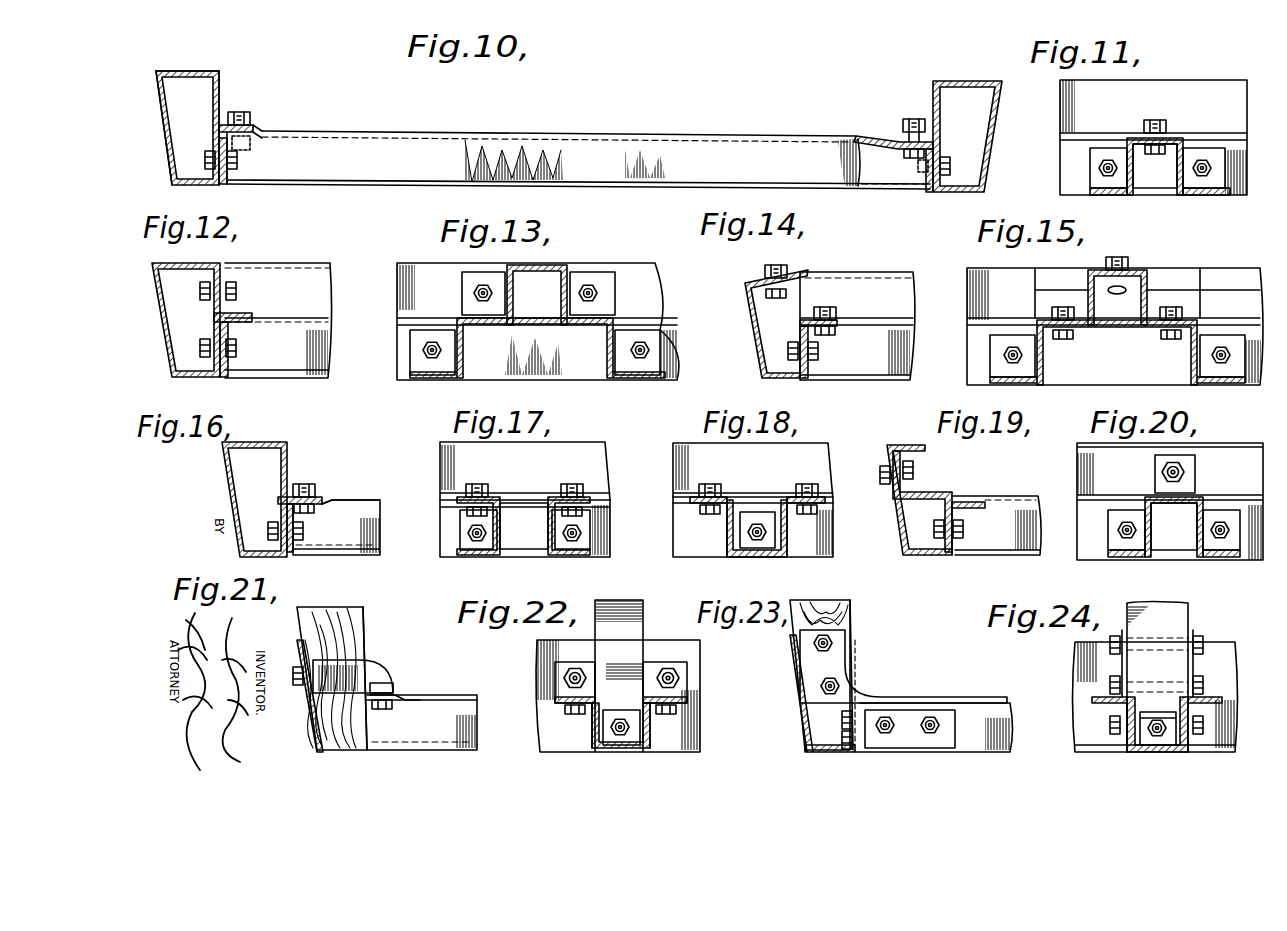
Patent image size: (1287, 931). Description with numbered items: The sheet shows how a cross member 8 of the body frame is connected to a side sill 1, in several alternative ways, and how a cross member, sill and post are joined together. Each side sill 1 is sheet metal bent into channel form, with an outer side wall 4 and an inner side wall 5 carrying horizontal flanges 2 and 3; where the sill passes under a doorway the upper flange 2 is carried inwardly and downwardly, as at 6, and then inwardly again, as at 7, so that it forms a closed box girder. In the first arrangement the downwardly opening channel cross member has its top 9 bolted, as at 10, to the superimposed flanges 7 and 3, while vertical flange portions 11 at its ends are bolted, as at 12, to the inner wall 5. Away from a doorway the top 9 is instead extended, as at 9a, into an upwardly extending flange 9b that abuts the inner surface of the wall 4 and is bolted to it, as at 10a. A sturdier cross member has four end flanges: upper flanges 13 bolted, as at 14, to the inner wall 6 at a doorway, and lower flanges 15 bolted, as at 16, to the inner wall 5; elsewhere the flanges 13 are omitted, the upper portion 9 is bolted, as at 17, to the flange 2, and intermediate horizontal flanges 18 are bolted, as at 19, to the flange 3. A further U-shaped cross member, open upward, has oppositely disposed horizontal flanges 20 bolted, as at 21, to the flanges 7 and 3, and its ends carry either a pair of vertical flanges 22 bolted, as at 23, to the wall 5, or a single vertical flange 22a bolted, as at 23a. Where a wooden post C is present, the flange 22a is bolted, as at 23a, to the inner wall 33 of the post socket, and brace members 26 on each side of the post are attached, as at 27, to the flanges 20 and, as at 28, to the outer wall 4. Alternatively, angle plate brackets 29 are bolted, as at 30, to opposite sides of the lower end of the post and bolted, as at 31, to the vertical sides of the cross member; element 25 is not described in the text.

In FIG. 10, the side sill 1 is at (165, 88).
In FIG. 11, the side sill 1 is at (1218, 90).
In FIG. 12, the side sill 1 is at (162, 330).
In FIG. 14, the side sill 1 is at (760, 360).
In FIG. 16, the side sill 1 is at (222, 478).
In FIG. 10, the upper horizontal flange 2 is at (213, 75).
In FIG. 14, the upper horizontal flange 2 is at (755, 284).
In FIG. 15, the upper horizontal flange 2 is at (1070, 270).
In FIG. 19, the upper horizontal flange 2 is at (914, 447).
In FIG. 20, the upper horizontal flange 2 is at (1220, 447).
In FIG. 10, the horizontal flange 3 is at (256, 131).
In FIG. 14, the horizontal flange 3 is at (838, 330).
In FIG. 16, the horizontal flange 3 is at (280, 500).
In FIG. 17, the horizontal flange 3 is at (612, 500).
In FIG. 18, the horizontal flange 3 is at (753, 500).
In FIG. 19, the horizontal flange 3 is at (972, 509).
In FIG. 20, the horizontal flange 3 is at (1092, 503).
In FIG. 10, the outer side wall 4 is at (160, 128).
In FIG. 14, the outer side wall 4 is at (748, 330).
In FIG. 19, the outer side wall 4 is at (898, 520).
In FIG. 20, the outer side wall 4 is at (1243, 455).
In FIG. 21, the outer side wall 4 is at (300, 652).
In FIG. 23, the outer side wall 4 is at (822, 693).
In FIG. 24, the outer side wall 4 is at (1100, 650).
In FIG. 10, the inner side wall 5 is at (220, 134).
In FIG. 11, the inner side wall 5 is at (1235, 157).
In FIG. 12, the inner side wall 5 is at (215, 320).
In FIG. 14, the inner side wall 5 is at (800, 330).
In FIG. 16, the inner side wall 5 is at (284, 506).
In FIG. 17, the inner side wall 5 is at (612, 545).
In FIG. 18, the inner side wall 5 is at (668, 546).
In FIG. 20, the inner side wall 5 is at (1262, 568).
In FIG. 10, the inwardly and downwardly extended flange portion 6 is at (222, 80).
In FIG. 11, the inwardly and downwardly extended flange portion 6 is at (1235, 100).
In FIG. 12, the inwardly and downwardly extended flange portion 6 is at (210, 272).
In FIG. 17, the inwardly and downwardly extended flange portion 6 is at (607, 453).
In FIG. 10, the inwardly extended flange portion 7 is at (252, 125).
In FIG. 16, the inwardly extended flange portion 7 is at (320, 497).
In FIG. 17, the inwardly extended flange portion 7 is at (610, 490).
In FIG. 18, the inwardly extended flange portion 7 is at (753, 500).
In FIG. 10, the cross member 8 is at (600, 137).
In FIG. 11, the cross member 8 is at (1130, 138).
In FIG. 12, the cross member 8 is at (328, 312).
In FIG. 13, the cross member 8 is at (560, 290).
In FIG. 14, the cross member 8 is at (905, 335).
In FIG. 15, the cross member 8 is at (1145, 306).
In FIG. 16, the cross member 8 is at (382, 510).
In FIG. 17, the cross member 8 is at (538, 557).
In FIG. 18, the cross member 8 is at (757, 557).
In FIG. 19, the cross member 8 is at (1030, 540).
In FIG. 20, the cross member 8 is at (1200, 522).
In FIG. 21, the cross member 8 is at (465, 695).
In FIG. 22, the cross member 8 is at (600, 752).
In FIG. 23, the cross member 8 is at (1000, 715).
In FIG. 24, the cross member 8 is at (1158, 752).
In FIG. 10, the top of cross member 9 is at (898, 143).
In FIG. 11, the top of cross member 9 is at (1178, 138).
In FIG. 13, the top of cross member 9 is at (540, 266).
In FIG. 14, the top of cross member 9 is at (915, 275).
In FIG. 15, the top of cross member 9 is at (1148, 272).
In FIG. 19, the top of cross member 9 is at (990, 497).
In FIG. 20, the top of cross member 9 is at (1175, 513).
In FIG. 19, the extension of top portion 9a is at (950, 494).
In FIG. 19, the upwardly extending flange 9b is at (915, 470).
In FIG. 20, the upwardly extending flange 9b is at (1190, 487).
In FIG. 10, the bolt 10 is at (924, 120).
In FIG. 11, the bolt 10 is at (1158, 120).
In FIG. 19, the bolt 10a is at (882, 474).
In FIG. 20, the bolt 10a is at (1160, 470).
In FIG. 10, the vertical flange portion 11 is at (223, 184).
In FIG. 11, the vertical flange portion 11 is at (1095, 160).
In FIG. 19, the vertical flange portion 11 is at (955, 556).
In FIG. 20, the vertical flange portion 11 is at (1112, 533).
In FIG. 10, the bolt 12 is at (952, 167).
In FIG. 11, the bolt 12 is at (1105, 178).
In FIG. 19, the bolt 12 is at (968, 535).
In FIG. 20, the bolt 12 is at (1140, 537).
In FIG. 12, the upper vertical flange 13 is at (220, 266).
In FIG. 13, the upper vertical flange 13 is at (478, 270).
In FIG. 12, the bolt 14 is at (240, 290).
In FIG. 13, the bolt 14 is at (470, 294).
In FIG. 12, the lower vertical flange 15 is at (228, 357).
In FIG. 13, the lower vertical flange 15 is at (415, 360).
In FIG. 14, the lower vertical flange 15 is at (820, 354).
In FIG. 15, the lower vertical flange 15 is at (1225, 383).
In FIG. 12, the bolt 16 is at (240, 345).
In FIG. 13, the bolt 16 is at (620, 348).
In FIG. 15, the bolt 16 is at (1025, 357).
In FIG. 14, the bolt 17 is at (777, 266).
In FIG. 15, the bolt 17 is at (1123, 256).
In FIG. 14, the intermediate horizontal flange 18 is at (838, 318).
In FIG. 15, the intermediate horizontal flange 18 is at (1168, 335).
In FIG. 14, the bolt 19 is at (830, 305).
In FIG. 15, the bolt 19 is at (1185, 310).
In FIG. 16, the horizontal flange 20 is at (328, 503).
In FIG. 17, the horizontal flange 20 is at (500, 500).
In FIG. 18, the horizontal flange 20 is at (700, 517).
In FIG. 21, the horizontal flange 20 is at (402, 695).
In FIG. 22, the horizontal flange 20 is at (558, 700).
In FIG. 16, the bolt 21 is at (312, 484).
In FIG. 17, the bolt 21 is at (490, 477).
In FIG. 18, the bolt 21 is at (805, 483).
In FIG. 16, the vertical flange 22 is at (285, 552).
In FIG. 17, the vertical flange 22 is at (470, 553).
In FIG. 18, the single vertical flange 22a is at (770, 553).
In FIG. 22, the single vertical flange 22a is at (650, 752).
In FIG. 24, the single vertical flange 22a is at (1180, 752).
In FIG. 16, the bolt 23 is at (303, 530).
In FIG. 17, the bolt 23 is at (466, 531).
In FIG. 18, the bolt 23a is at (745, 553).
In FIG. 22, the bolt 23a is at (615, 752).
In FIG. 24, the bolt 23a is at (1140, 752).
In FIG. 22, the rail web 25 is at (570, 737).
In FIG. 21, the brace member 26 is at (365, 670).
In FIG. 21, the attachment 27 is at (390, 683).
In FIG. 22, the attachment 27 is at (555, 673).
In FIG. 21, the attachment 28 is at (297, 682).
In FIG. 23, the angle plate bracket 29 is at (840, 660).
In FIG. 23, the bolt 30 is at (820, 685).
In FIG. 24, the bolt 30 is at (1113, 658).
In FIG. 24, the bolt 31 is at (1110, 721).
In FIG. 21, the inner wall of post socket 33 is at (358, 620).
In FIG. 22, the inner wall of post socket 33 is at (645, 617).
In FIG. 23, the inner wall of post socket 33 is at (850, 616).
In FIG. 24, the inner wall of post socket 33 is at (1175, 620).
In FIG. 21, the wooden post C is at (315, 612).
In FIG. 23, the wooden post C is at (835, 600).